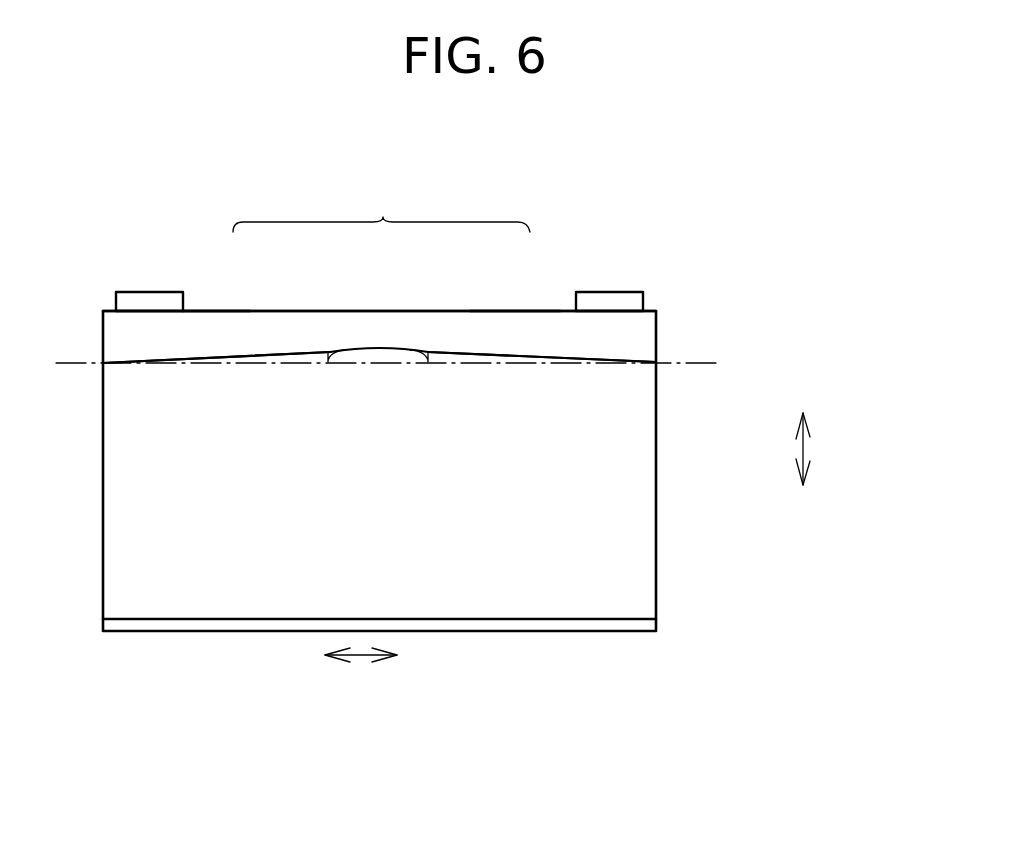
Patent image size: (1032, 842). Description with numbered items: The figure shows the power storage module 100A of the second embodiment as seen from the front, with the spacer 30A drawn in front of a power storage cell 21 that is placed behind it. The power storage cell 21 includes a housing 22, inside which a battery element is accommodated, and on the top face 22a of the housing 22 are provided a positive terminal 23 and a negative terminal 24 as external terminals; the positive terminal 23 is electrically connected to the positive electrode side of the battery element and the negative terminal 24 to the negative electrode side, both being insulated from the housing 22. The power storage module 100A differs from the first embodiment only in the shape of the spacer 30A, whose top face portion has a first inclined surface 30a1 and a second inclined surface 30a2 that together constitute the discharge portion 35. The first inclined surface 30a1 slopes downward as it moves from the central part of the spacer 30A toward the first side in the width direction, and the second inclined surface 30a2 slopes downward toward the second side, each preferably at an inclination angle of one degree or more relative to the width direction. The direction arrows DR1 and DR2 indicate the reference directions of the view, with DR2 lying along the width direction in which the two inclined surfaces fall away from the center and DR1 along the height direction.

The power storage module 100A is at (670, 272).
The power storage cell 21 is at (213, 298).
The housing 22 is at (657, 334).
The top face 22a is at (555, 311).
The positive terminal 23 is at (605, 292).
The negative terminal 24 is at (146, 292).
The spacer 30A is at (633, 480).
The first inclined surface 30a1 is at (272, 352).
The second inclined surface 30a2 is at (485, 353).
The discharge portion 35 is at (381, 207).
The first direction (thickness direction) DR1 is at (805, 450).
The second direction (lateral direction) DR2 is at (362, 655).